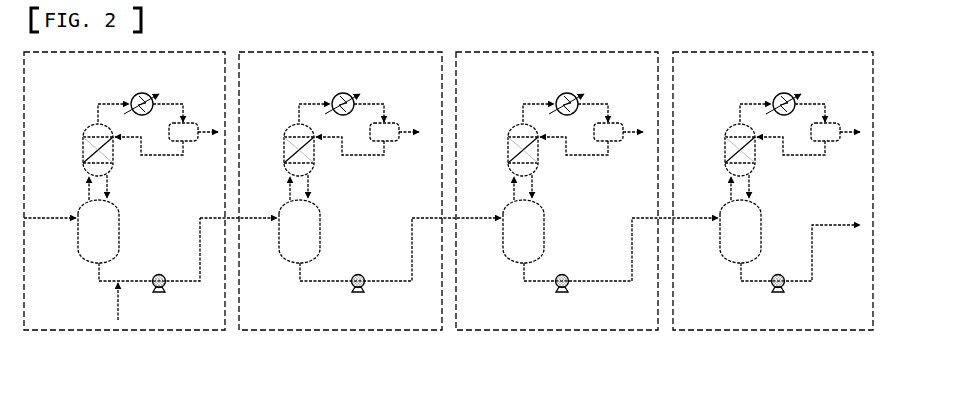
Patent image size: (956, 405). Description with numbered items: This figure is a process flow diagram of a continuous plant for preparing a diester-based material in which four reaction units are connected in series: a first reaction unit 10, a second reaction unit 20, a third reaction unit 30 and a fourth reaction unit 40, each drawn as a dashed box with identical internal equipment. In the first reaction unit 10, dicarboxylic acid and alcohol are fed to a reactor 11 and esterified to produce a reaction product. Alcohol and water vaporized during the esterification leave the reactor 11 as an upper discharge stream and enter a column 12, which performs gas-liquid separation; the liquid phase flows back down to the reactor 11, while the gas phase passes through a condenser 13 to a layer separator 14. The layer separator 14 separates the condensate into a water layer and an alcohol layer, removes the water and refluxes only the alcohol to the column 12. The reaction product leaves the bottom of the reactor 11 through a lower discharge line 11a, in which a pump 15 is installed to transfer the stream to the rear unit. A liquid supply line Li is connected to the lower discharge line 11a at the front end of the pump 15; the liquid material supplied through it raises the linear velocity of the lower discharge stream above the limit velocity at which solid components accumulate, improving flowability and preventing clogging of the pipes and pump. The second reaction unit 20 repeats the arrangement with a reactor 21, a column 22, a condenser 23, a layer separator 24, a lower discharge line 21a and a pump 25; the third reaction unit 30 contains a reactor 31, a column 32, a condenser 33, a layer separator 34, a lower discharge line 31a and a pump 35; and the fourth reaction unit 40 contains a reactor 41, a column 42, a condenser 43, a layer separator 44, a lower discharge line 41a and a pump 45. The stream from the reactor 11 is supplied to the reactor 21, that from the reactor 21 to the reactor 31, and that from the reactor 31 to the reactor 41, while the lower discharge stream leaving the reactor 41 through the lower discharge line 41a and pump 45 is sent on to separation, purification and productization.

The first reaction unit 10 is at (44, 349).
The reactor 11 is at (98, 231).
The lower discharge line 11a is at (97, 272).
The column 12 is at (83, 140).
The condenser 13 is at (127, 96).
The layer separator 14 is at (190, 121).
The pump 15 is at (165, 290).
The liquid supply line Li is at (117, 300).
The second reaction unit 20 is at (340, 201).
The reactor 21 is at (299, 231).
The lower discharge line 21a is at (329, 249).
The column 22 is at (278, 150).
The condenser 23 is at (324, 94).
The layer separator 24 is at (367, 116).
The pump 25 is at (376, 297).
The third reaction unit 30 is at (557, 201).
The reactor 31 is at (523, 231).
The lower discharge line 31a is at (551, 249).
The column 32 is at (499, 150).
The condenser 33 is at (548, 94).
The layer separator 34 is at (591, 116).
The pump 35 is at (580, 297).
The fourth reaction unit 40 is at (773, 201).
The reactor 41 is at (740, 231).
The lower discharge line 41a is at (774, 253).
The column 42 is at (715, 150).
The condenser 43 is at (765, 94).
The layer separator 44 is at (808, 116).
The pump 45 is at (796, 297).